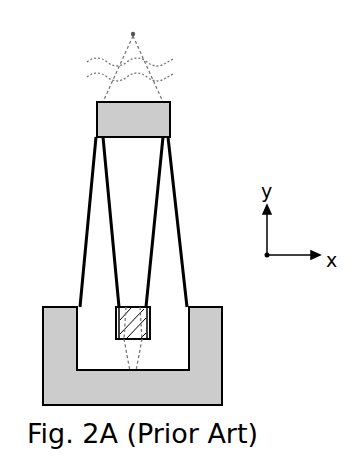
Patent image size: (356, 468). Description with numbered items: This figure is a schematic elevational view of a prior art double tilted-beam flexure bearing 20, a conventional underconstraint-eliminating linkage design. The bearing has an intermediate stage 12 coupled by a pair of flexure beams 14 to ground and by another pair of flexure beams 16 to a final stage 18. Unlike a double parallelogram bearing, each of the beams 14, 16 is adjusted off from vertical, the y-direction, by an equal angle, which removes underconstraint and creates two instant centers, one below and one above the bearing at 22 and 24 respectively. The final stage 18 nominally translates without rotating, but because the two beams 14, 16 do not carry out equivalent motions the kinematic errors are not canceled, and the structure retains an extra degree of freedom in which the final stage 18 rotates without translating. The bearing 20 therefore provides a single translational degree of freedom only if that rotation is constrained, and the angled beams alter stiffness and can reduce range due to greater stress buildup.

The intermediate stage 12 is at (143, 129).
The flexure beams 14 is at (110, 204).
The flexure beams 16 is at (77, 250).
The final stage 18 is at (91, 393).
The double tilted-beam flexure bearing 20 is at (101, 200).
The instant center 22 is at (136, 34).
The instant center 24 is at (136, 387).